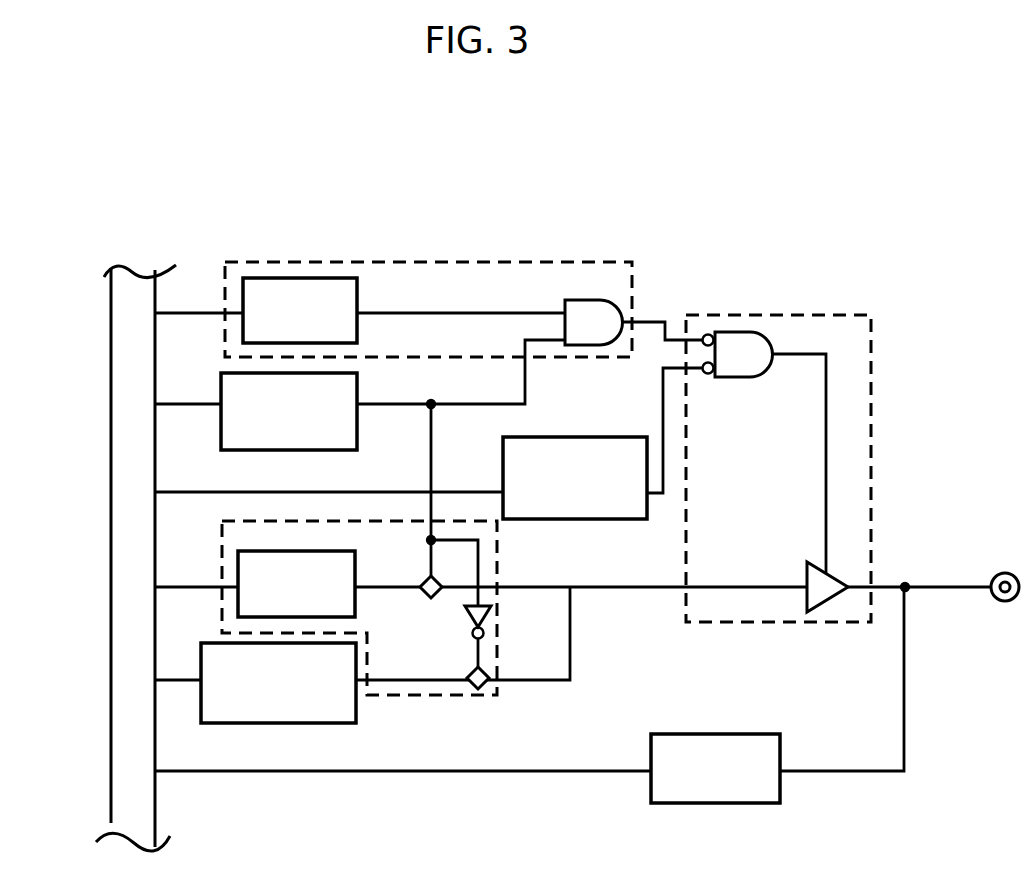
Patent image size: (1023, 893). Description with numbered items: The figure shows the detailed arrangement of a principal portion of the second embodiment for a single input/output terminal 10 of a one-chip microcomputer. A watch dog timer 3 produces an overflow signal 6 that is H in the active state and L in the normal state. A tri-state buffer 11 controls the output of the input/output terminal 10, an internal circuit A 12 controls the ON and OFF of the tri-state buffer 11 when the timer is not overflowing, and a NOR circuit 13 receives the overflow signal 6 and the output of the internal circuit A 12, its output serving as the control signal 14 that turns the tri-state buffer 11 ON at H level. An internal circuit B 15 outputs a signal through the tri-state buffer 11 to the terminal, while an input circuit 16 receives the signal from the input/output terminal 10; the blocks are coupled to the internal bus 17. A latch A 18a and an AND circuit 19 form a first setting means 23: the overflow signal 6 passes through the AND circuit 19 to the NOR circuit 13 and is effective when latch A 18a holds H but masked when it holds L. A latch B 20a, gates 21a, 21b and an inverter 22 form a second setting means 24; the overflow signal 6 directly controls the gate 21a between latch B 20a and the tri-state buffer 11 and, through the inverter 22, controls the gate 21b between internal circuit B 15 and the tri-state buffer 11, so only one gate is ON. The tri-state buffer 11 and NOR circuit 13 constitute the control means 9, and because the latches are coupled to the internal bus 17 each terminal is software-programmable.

The watch dog timer 3 is at (359, 383).
The overflow signal 6 is at (440, 403).
The control means 9 is at (812, 313).
The input/output terminal 10 is at (1003, 573).
The tri-state buffer 11 is at (834, 573).
The internal circuit A 12 is at (570, 437).
The NOR circuit 13 is at (772, 341).
The control signal 14 is at (826, 471).
The internal circuit B 15 is at (330, 724).
The input circuit 16 is at (756, 733).
The internal bus 17 is at (109, 671).
The latch A 18a is at (357, 300).
The AND circuit 19 is at (566, 300).
The latch B 20a is at (357, 570).
The gate 21a is at (421, 595).
The gate 21b is at (468, 672).
The inverter 22 is at (470, 620).
The first setting means 23 is at (453, 262).
The second setting means 24 is at (497, 561).